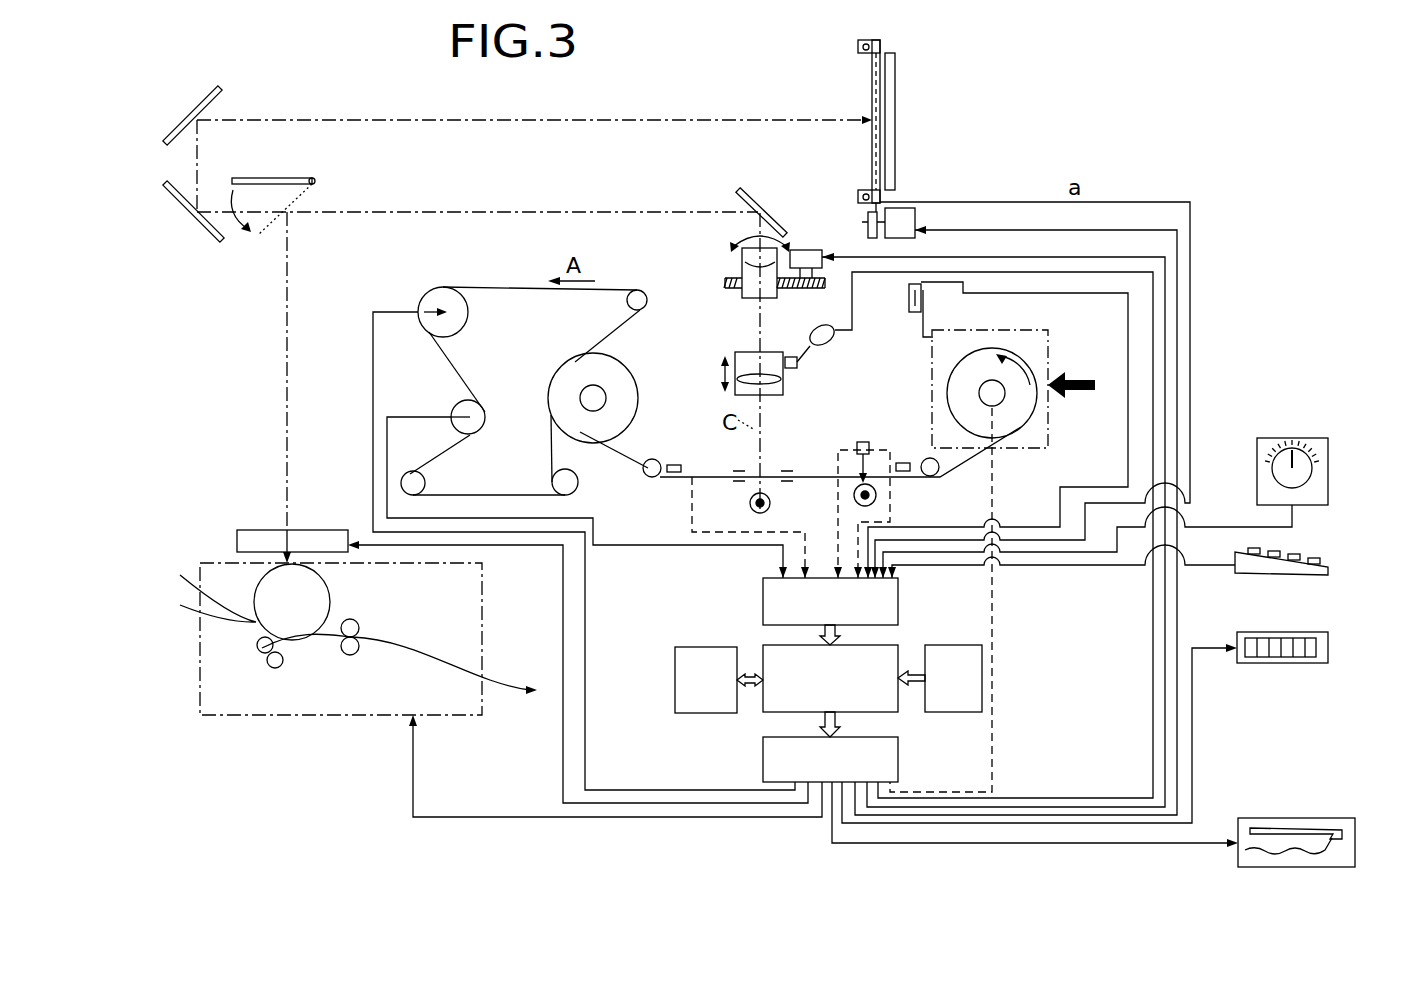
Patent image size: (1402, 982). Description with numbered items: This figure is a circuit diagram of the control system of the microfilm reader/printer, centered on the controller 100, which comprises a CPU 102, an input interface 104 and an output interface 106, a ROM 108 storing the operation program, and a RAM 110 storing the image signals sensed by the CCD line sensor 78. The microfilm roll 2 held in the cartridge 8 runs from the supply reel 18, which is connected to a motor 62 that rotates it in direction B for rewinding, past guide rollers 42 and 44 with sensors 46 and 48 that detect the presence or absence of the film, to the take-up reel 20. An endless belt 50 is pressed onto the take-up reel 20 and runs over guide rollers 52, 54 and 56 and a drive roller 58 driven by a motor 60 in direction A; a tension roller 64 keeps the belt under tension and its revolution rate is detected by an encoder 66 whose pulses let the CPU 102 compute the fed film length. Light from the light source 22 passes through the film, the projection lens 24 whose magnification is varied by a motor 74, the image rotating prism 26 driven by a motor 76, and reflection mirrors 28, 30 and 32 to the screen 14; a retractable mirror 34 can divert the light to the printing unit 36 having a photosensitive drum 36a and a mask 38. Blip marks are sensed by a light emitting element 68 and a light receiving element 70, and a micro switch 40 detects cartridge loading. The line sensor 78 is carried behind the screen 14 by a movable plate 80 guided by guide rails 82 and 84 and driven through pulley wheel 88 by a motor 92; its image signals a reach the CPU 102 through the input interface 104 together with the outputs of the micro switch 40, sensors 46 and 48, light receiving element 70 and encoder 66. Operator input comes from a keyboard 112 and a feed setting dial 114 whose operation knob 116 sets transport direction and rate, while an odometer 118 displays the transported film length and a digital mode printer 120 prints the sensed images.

The microfilm roll 2 is at (978, 454).
The cartridge 8 is at (1040, 324).
The light transmitting screen 14 is at (895, 88).
The supply reel 18 is at (1032, 372).
The take-up reel 20 is at (621, 362).
The light source 22 is at (772, 503).
The projection lens 24 is at (775, 395).
The image rotating prism 26 is at (738, 270).
The reflection mirror 28 is at (762, 190).
The reflection mirror 30 is at (190, 228).
The reflection mirror 32 is at (219, 98).
The retractable mirror 34 is at (298, 178).
The printing unit 36 is at (322, 628).
The photosensitive drum 36a is at (254, 616).
The mask 38 is at (248, 530).
The micro switch 40 is at (910, 312).
The guide roller 42 is at (938, 474).
The guide roller 44 is at (631, 476).
The sensor 46 is at (903, 462).
The sensor 48 is at (673, 465).
The endless belt 50 is at (505, 288).
The guide roller 52 is at (630, 291).
The guide roller 54 is at (553, 478).
The guide roller 56 is at (426, 485).
The drive roller 58 is at (430, 285).
The motor 60 is at (457, 288).
The motor 62 is at (1003, 402).
The tension roller 64 is at (432, 397).
The encoder 66 is at (452, 405).
The light emitting element 68 is at (876, 492).
The light receiving element 70 is at (862, 442).
The motor 74 is at (830, 345).
The motor 76 is at (806, 250).
The CCD line sensor 78 is at (870, 76).
The movable plate 80 is at (880, 46).
The guide rail 82 is at (860, 40).
The guide rail 84 is at (858, 197).
The pulley wheel 88 is at (868, 226).
The motor 92 is at (915, 215).
The controller 100 is at (789, 667).
The CPU 102 is at (763, 646).
The input interface 104 is at (763, 598).
The output interface 106 is at (763, 765).
The ROM 108 is at (945, 645).
The RAM 110 is at (675, 676).
The keyboard 112 is at (1273, 575).
The feed setting dial 114 is at (1264, 451).
The operation knob 116 is at (1276, 483).
The odometer 118 is at (1262, 663).
The digital mode printer 120 is at (1272, 818).